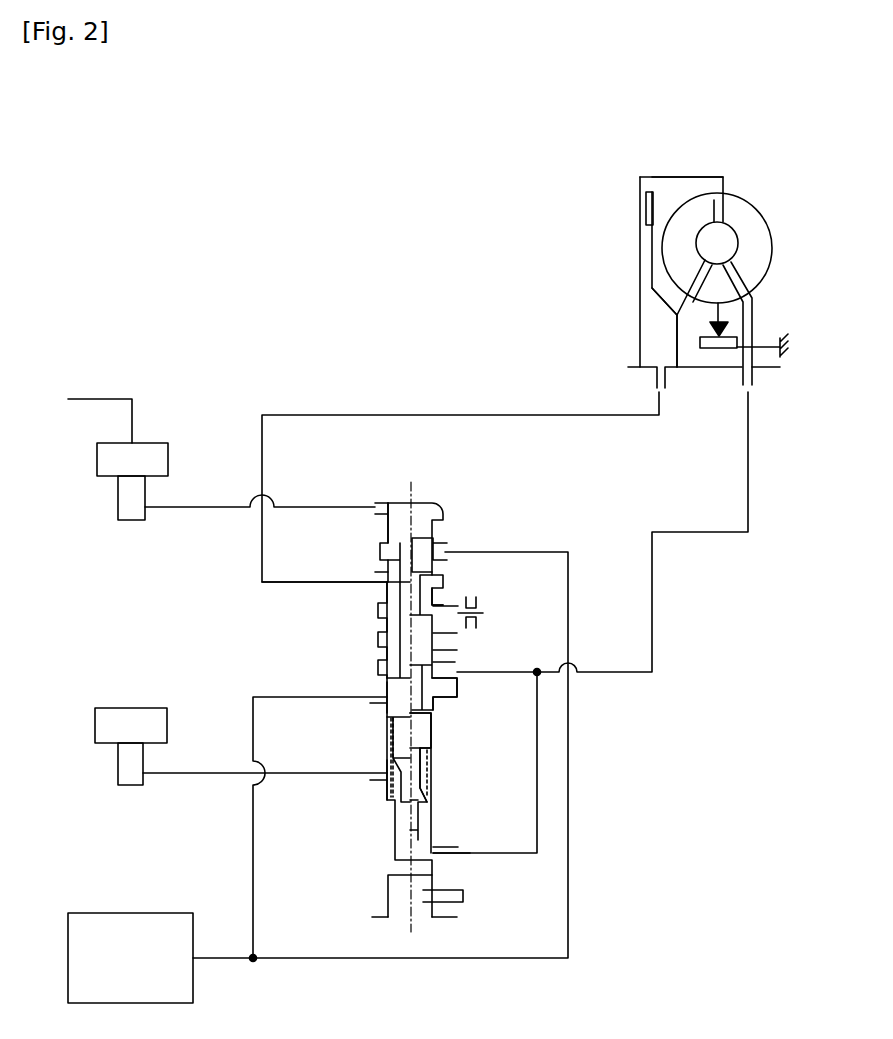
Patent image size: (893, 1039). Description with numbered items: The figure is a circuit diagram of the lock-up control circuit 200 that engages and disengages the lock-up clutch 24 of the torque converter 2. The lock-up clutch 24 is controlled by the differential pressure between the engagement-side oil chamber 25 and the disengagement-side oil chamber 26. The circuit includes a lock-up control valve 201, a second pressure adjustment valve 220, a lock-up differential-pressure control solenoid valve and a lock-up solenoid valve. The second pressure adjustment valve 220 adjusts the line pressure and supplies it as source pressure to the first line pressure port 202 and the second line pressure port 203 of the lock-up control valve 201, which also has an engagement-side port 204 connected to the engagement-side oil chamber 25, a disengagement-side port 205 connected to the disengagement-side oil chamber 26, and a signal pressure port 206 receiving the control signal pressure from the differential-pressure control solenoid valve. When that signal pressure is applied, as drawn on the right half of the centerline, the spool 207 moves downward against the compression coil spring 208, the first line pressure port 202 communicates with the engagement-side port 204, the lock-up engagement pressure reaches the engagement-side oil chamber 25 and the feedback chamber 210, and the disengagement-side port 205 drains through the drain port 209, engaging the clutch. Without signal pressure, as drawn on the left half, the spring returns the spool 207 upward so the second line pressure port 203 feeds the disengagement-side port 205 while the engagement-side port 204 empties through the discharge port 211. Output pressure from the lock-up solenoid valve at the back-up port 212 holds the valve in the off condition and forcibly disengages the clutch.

The torque converter 2 is at (682, 260).
The lock-up clutch 24 is at (646, 205).
The engagement-side oil chamber 25 is at (675, 187).
The disengagement-side oil chamber 26 is at (650, 313).
The lock-up control circuit 200 is at (355, 350).
The lock-up control valve 201 is at (399, 687).
The first line pressure port 202 is at (373, 699).
The second line pressure port 203 is at (446, 551).
The engagement-side port 204 is at (457, 680).
The disengagement-side port 205 is at (376, 583).
The signal pressure port 206 is at (376, 514).
The spool 207 is at (432, 733).
The compression coil spring 208 is at (431, 795).
The drain port 209 is at (450, 606).
The feedback chamber 210 is at (438, 853).
The discharge port 211 is at (453, 640).
The back-up port 212 is at (371, 779).
The second pressure adjustment valve 220 is at (130, 913).